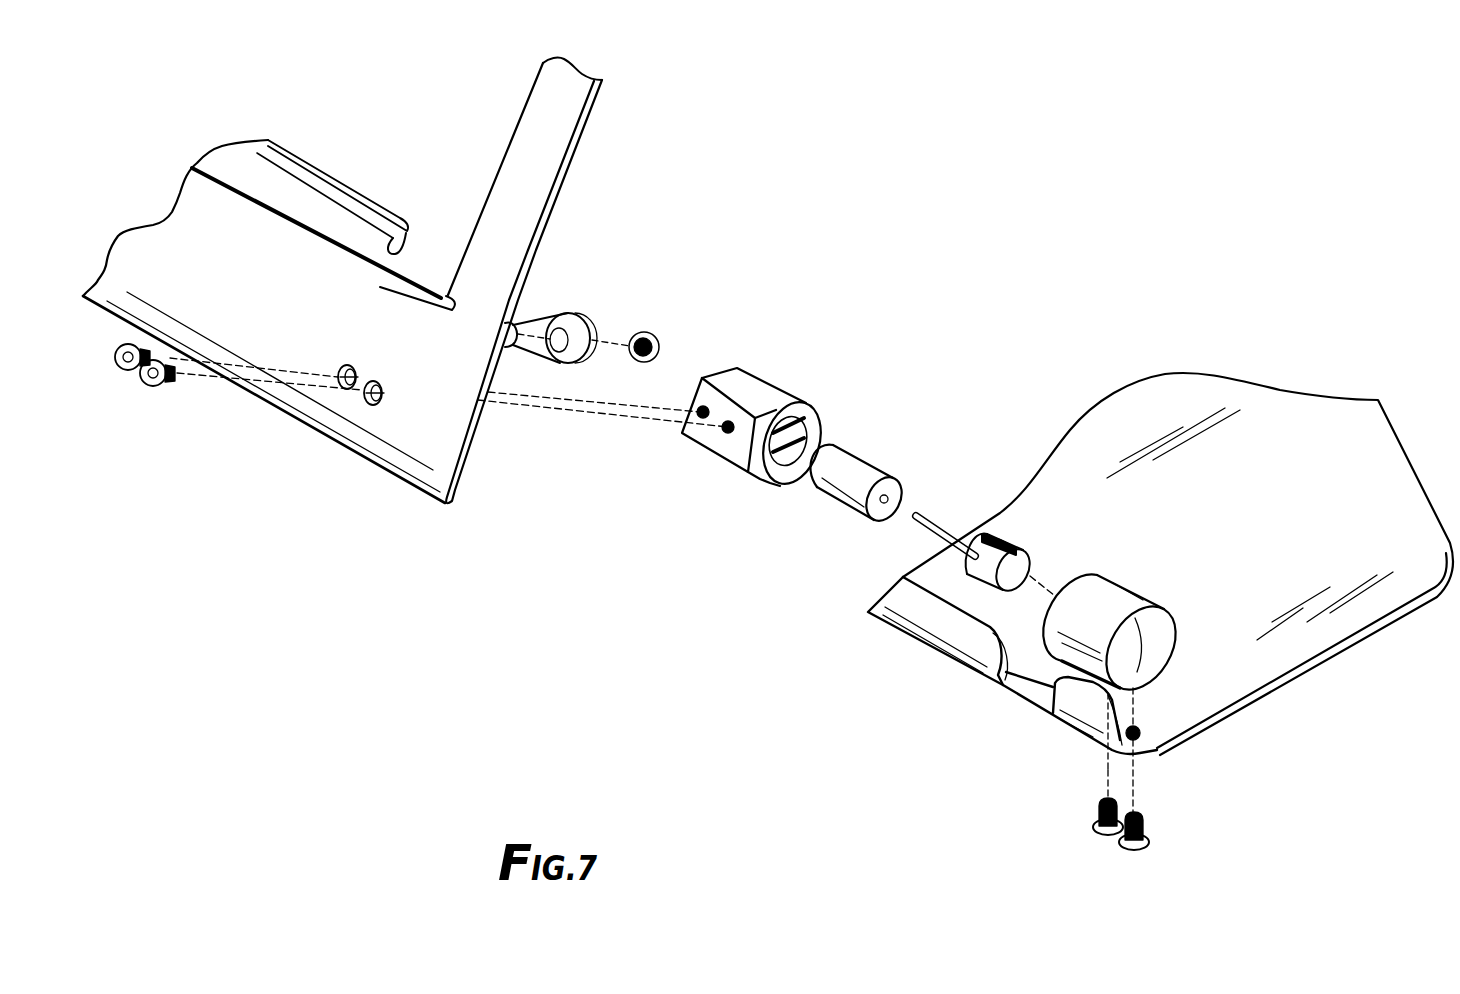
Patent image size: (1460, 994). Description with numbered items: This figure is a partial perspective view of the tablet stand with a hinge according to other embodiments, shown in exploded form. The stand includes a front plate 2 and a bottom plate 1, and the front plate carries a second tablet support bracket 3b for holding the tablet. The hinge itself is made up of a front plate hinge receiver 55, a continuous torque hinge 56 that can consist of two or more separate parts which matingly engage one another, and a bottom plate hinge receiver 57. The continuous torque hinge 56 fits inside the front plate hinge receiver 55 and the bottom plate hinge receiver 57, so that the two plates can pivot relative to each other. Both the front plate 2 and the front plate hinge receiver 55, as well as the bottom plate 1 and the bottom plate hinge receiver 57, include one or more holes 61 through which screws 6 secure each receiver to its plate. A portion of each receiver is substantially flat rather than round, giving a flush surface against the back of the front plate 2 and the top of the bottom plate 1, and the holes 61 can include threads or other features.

The bottom plate 1 is at (1278, 390).
The front plate 2 is at (570, 139).
The second tablet support bracket 3b is at (439, 239).
The front plate hinge receiver 55 is at (778, 388).
The continuous torque hinge 56 is at (934, 512).
The bottom plate hinge receiver 57 is at (1170, 642).
The screws 6 is at (1123, 842).
The holes 61 is at (371, 403).